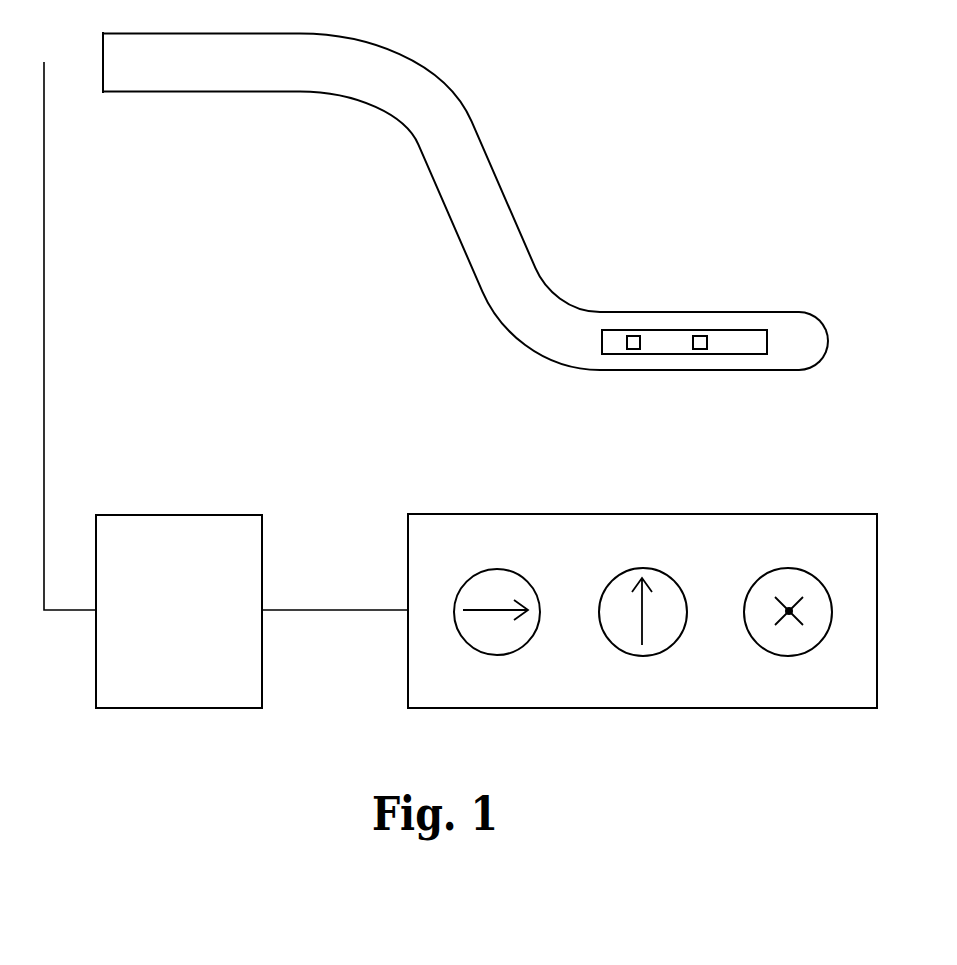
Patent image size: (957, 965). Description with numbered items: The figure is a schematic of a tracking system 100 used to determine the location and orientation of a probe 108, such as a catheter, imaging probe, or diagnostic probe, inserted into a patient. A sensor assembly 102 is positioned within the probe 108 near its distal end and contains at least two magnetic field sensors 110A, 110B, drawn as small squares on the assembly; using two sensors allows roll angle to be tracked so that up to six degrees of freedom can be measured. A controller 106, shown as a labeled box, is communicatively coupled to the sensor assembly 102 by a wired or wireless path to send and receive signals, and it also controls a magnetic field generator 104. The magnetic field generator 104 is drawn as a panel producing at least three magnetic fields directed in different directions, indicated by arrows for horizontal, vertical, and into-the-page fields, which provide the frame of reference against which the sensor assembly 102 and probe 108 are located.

The tracking system 100 is at (647, 59).
The probe 108 is at (503, 187).
The sensor assembly 102 is at (681, 330).
The magnetic field sensor 110A is at (633, 349).
The magnetic field sensor 110B is at (700, 349).
The controller 106 is at (180, 708).
The magnetic field generator 104 is at (644, 708).